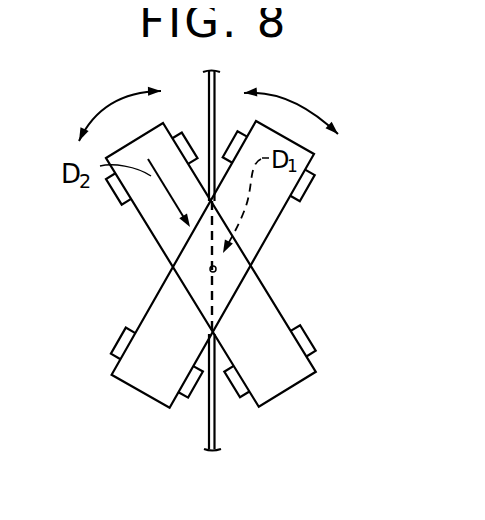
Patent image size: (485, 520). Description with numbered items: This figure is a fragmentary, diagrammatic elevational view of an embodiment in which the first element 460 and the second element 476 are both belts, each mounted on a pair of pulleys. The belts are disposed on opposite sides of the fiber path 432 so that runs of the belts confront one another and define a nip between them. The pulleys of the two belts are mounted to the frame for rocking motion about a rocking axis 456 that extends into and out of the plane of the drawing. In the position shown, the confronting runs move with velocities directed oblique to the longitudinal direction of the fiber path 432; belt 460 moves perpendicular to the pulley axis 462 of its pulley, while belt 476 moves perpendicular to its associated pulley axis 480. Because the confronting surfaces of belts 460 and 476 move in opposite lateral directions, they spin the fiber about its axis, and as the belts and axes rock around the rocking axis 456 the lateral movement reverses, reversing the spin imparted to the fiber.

The fiber path 432 is at (215, 90).
The rocking axis 456 is at (213, 288).
The first element 460 is at (262, 222).
The pulley axis 462 is at (323, 205).
The second element 476 is at (162, 228).
The pulley axis 480 is at (112, 193).